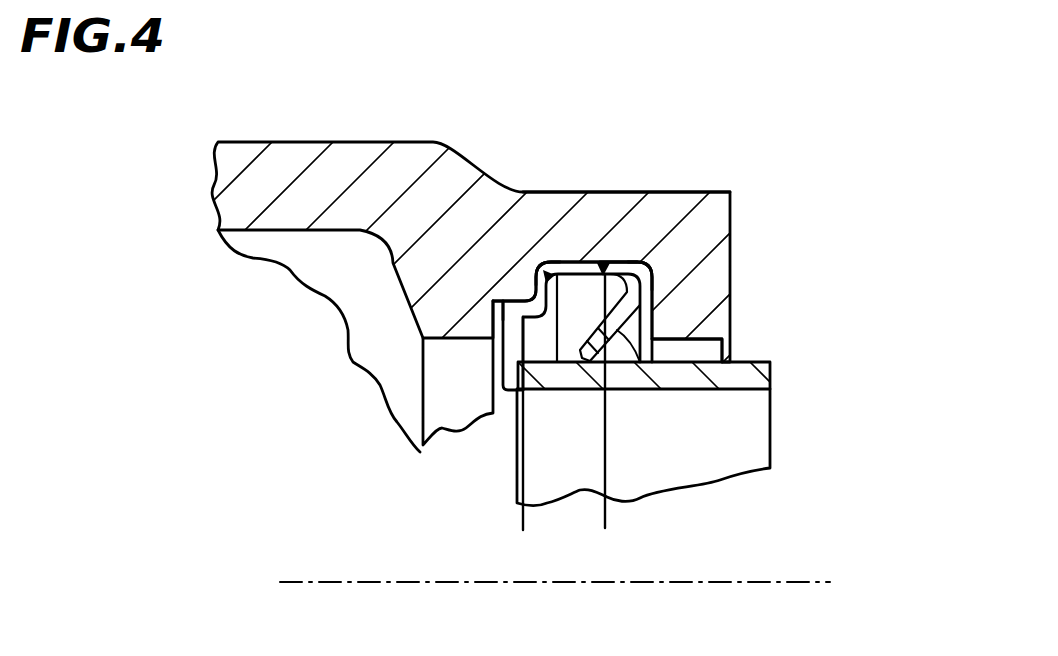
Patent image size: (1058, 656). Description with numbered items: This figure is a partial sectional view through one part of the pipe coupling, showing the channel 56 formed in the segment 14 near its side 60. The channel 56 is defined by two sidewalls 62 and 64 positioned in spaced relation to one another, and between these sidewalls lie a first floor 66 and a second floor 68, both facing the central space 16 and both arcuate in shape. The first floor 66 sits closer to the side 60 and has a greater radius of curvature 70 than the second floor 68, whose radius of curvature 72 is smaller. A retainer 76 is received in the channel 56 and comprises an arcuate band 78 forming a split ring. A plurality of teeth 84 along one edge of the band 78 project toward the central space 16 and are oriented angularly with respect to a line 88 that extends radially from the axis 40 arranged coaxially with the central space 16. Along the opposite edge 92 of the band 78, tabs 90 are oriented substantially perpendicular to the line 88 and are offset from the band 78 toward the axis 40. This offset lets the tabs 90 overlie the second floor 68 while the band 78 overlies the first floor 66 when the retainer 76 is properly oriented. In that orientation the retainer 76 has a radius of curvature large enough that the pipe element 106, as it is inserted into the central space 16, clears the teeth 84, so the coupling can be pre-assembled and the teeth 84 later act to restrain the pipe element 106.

The segment 14 is at (727, 192).
The central space 16 is at (318, 444).
The axis 40 is at (545, 583).
The second channel 56 is at (638, 260).
The side 60 is at (728, 258).
The sidewall 62 is at (432, 328).
The sidewall 64 is at (700, 332).
The first floor 66 is at (565, 262).
The second floor 68 is at (488, 302).
The radius of curvature 70 is at (603, 480).
The radius of curvature 72 is at (517, 480).
The retainer 76 is at (628, 262).
The arcuate band 78 is at (621, 301).
The teeth 84 is at (630, 337).
The line 88 is at (625, 347).
The tabs 90 is at (468, 340).
The edge 92 is at (536, 262).
The pipe element 106 is at (735, 376).